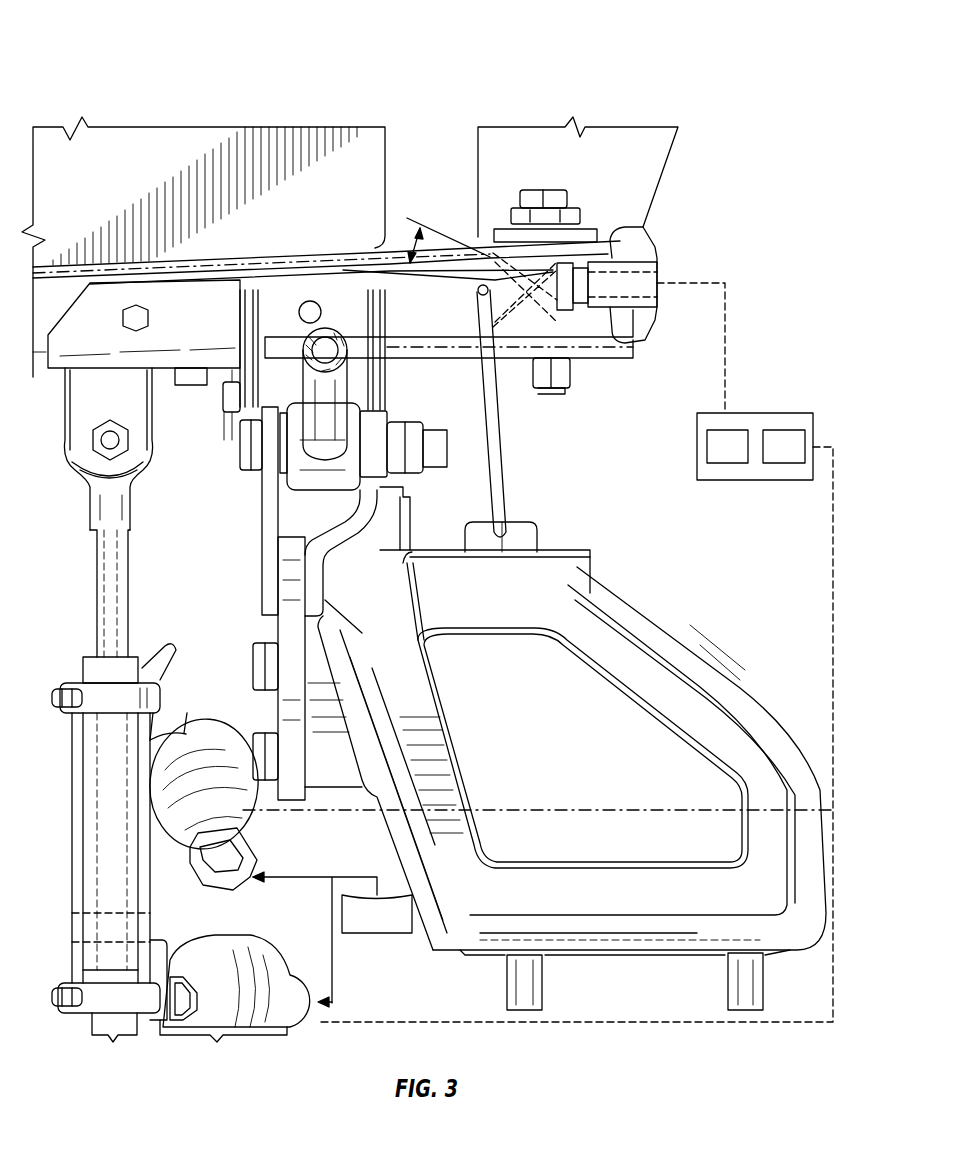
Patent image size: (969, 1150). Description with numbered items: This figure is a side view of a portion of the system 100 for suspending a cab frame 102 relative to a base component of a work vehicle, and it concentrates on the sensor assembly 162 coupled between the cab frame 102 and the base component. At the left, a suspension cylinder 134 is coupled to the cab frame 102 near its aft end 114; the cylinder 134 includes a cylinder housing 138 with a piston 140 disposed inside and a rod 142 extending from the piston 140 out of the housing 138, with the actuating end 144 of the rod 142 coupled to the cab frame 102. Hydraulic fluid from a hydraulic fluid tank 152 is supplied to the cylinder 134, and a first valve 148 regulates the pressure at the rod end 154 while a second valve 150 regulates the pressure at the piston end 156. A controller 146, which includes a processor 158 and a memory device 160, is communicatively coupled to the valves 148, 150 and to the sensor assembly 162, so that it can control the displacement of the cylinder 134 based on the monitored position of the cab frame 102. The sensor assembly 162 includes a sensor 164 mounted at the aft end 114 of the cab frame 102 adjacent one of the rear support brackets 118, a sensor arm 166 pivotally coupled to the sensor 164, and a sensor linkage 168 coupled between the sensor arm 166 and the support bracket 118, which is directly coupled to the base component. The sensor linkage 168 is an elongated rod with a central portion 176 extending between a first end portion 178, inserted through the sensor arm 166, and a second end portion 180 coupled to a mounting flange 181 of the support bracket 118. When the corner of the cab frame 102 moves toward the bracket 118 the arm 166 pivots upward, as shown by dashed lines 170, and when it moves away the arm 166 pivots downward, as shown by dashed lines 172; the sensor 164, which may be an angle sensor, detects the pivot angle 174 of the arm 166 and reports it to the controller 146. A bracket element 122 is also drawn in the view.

The system 100 is at (55, 95).
The cab frame 102 is at (255, 118).
The aft end 114 is at (665, 150).
The rear support bracket 118 is at (628, 645).
The bracket 122 is at (280, 396).
The first suspension cylinder 134 is at (38, 648).
The cylinder housing 138 is at (72, 830).
The piston 140 is at (70, 940).
The rod 142 is at (88, 588).
The actuating end 144 is at (85, 473).
The controller 146 is at (770, 405).
The first valve 148 is at (197, 737).
The second valve 150 is at (205, 1010).
The hydraulic fluid tank 152 is at (380, 933).
The rod end 154 is at (73, 722).
The piston end 156 is at (100, 958).
The processor 158 is at (727, 446).
The memory device 160 is at (784, 446).
The sensor assembly 162 is at (607, 382).
The sensor 164 is at (635, 253).
The sensor arm 166 is at (497, 280).
The sensor linkage 168 is at (512, 407).
The dashed lines 170 is at (507, 229).
The dashed lines 172 is at (524, 310).
The pivot angle 174 is at (415, 240).
The central portion 176 is at (490, 380).
The first end portion 178 is at (481, 292).
The second end portion 180 is at (492, 535).
The mounting flange 181 is at (528, 533).